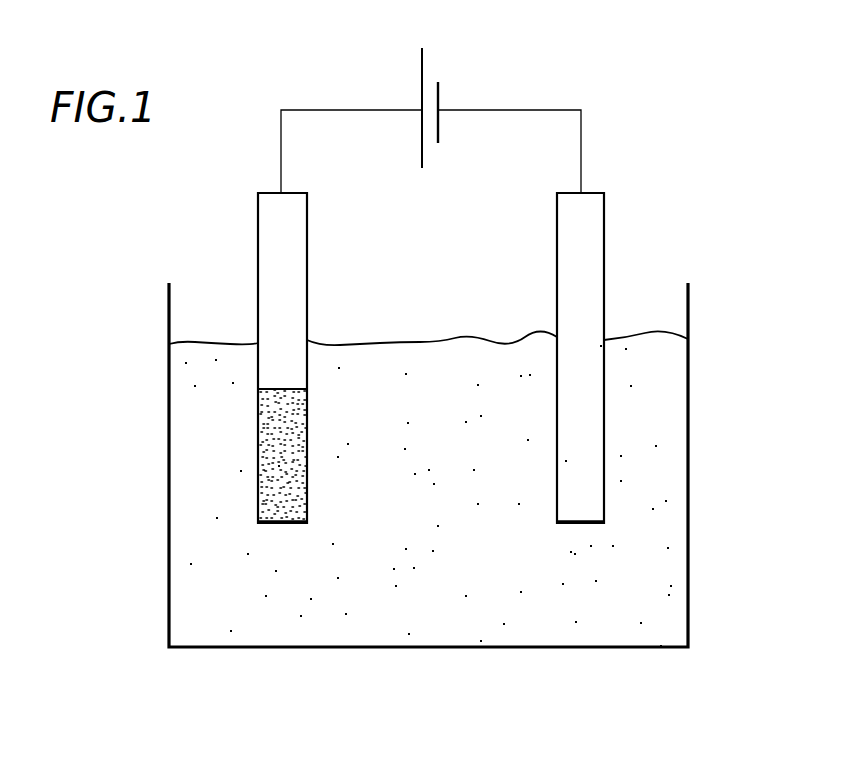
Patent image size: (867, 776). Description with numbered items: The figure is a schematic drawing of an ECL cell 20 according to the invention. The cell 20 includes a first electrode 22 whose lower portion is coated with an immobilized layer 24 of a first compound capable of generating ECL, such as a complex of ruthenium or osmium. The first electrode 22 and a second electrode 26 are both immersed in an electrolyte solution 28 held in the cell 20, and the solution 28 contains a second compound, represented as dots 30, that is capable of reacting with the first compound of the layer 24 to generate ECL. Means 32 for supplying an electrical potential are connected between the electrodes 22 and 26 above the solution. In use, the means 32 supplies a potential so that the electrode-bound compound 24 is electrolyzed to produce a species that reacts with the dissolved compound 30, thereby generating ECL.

The ECL cell 20 is at (702, 334).
The first electrode 22 is at (302, 238).
The immobilized layer of a first compound 24 is at (302, 422).
The second electrode 26 is at (595, 270).
The electrolyte solution 28 is at (397, 362).
The second compound (dots) 30 is at (420, 478).
The means for supplying an electrical potential 32 is at (478, 102).